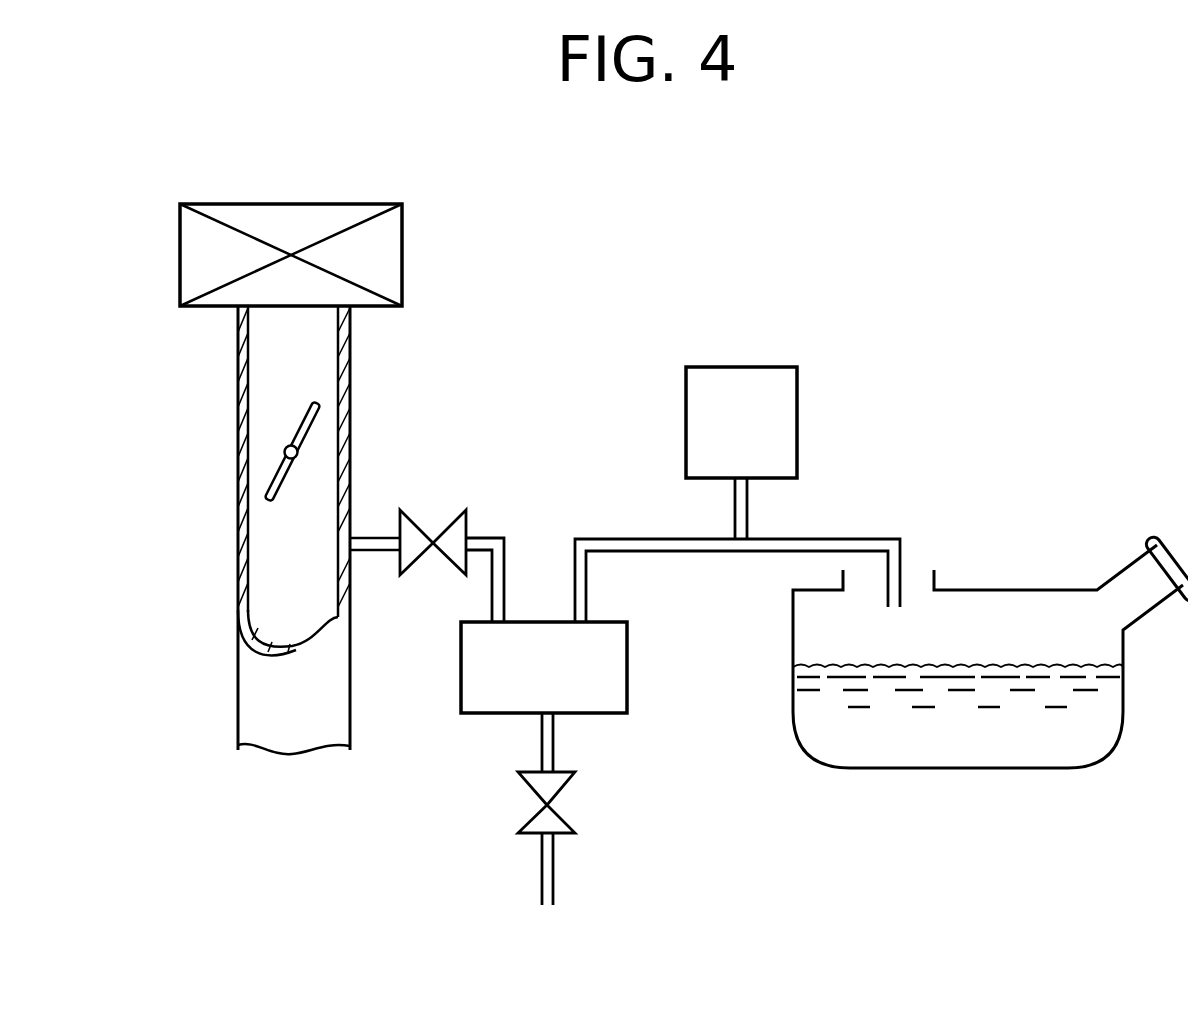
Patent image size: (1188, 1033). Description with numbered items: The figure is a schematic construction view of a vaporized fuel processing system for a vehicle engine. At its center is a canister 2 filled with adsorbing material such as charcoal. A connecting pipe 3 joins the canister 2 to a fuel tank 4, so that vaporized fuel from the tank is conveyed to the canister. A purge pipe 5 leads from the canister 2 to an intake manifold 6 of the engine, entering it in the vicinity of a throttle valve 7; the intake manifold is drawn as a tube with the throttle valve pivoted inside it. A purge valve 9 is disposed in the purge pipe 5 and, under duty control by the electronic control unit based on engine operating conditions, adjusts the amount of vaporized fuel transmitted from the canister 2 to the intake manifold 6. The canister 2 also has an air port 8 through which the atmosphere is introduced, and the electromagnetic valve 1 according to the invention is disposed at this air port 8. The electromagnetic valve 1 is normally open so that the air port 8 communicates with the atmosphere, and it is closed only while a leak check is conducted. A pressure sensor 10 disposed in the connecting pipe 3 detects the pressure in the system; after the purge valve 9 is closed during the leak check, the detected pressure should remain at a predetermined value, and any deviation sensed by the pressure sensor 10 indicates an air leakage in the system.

The electromagnetic valve 1 is at (553, 823).
The canister 2 is at (628, 688).
The connecting pipe 3 is at (832, 538).
The fuel tank 4 is at (1008, 768).
The purge pipe 5 is at (483, 537).
The intake manifold 6 is at (350, 360).
The throttle valve 7 is at (268, 482).
The air port 8 is at (539, 742).
The purge valve 9 is at (407, 530).
The pressure sensor 10 is at (788, 393).